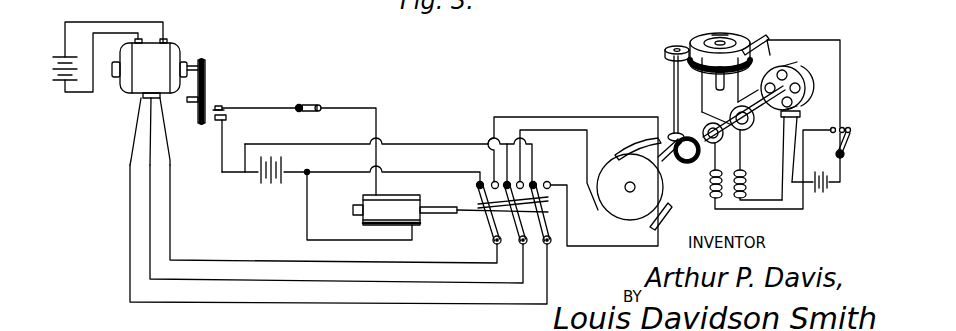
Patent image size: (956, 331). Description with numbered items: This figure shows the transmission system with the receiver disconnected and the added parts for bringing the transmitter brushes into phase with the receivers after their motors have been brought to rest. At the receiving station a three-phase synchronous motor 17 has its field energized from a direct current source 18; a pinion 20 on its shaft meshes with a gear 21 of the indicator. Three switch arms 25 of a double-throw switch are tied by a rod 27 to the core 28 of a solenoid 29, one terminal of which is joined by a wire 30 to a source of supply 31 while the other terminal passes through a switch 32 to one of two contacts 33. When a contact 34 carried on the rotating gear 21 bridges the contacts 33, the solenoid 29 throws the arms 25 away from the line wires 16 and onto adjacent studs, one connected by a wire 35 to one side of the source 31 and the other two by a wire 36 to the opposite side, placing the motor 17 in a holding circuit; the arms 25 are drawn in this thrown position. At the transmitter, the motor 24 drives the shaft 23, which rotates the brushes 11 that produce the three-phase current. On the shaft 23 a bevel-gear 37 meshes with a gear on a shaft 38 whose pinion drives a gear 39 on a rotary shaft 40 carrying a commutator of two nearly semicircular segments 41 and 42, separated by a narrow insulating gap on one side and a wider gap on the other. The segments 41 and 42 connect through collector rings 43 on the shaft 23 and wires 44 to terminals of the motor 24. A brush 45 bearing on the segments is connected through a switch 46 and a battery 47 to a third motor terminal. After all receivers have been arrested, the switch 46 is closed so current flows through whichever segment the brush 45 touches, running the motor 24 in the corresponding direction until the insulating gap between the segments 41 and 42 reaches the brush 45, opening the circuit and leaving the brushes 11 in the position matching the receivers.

The brushes 11 is at (663, 208).
The line wires 16 is at (578, 125).
The three-phase synchronous motor 17 is at (149, 102).
The direct current source 18 is at (60, 83).
The pinion 20 is at (203, 60).
The gear 21 is at (197, 112).
The shaft 23 is at (744, 114).
The motor 24 is at (806, 63).
The switch arms 25 is at (521, 200).
The rod 27 is at (470, 214).
The core 28 is at (440, 215).
The solenoid 29 is at (386, 210).
The wire 30 is at (306, 208).
The source of supply 31 is at (262, 181).
The switch 32 is at (302, 104).
The contacts 33 is at (221, 106).
The contact 34 is at (226, 118).
The wire 35 is at (421, 170).
The wire 36 is at (450, 143).
The bevel-gear 37 is at (690, 163).
The shaft 38 is at (673, 95).
The gear 39 is at (683, 68).
The rotary shaft 40 is at (722, 90).
The commutator segment 41 is at (703, 36).
The commutator segment 42 is at (740, 34).
The collector rings 43 is at (733, 142).
The wires 44 is at (779, 206).
The brush 45 is at (768, 36).
The switch 46 is at (838, 146).
The source of supply 47 is at (828, 193).